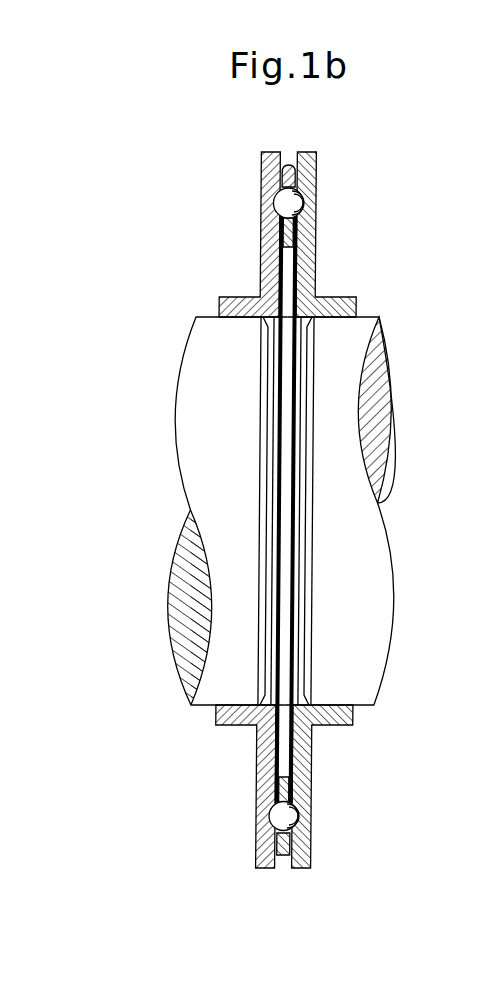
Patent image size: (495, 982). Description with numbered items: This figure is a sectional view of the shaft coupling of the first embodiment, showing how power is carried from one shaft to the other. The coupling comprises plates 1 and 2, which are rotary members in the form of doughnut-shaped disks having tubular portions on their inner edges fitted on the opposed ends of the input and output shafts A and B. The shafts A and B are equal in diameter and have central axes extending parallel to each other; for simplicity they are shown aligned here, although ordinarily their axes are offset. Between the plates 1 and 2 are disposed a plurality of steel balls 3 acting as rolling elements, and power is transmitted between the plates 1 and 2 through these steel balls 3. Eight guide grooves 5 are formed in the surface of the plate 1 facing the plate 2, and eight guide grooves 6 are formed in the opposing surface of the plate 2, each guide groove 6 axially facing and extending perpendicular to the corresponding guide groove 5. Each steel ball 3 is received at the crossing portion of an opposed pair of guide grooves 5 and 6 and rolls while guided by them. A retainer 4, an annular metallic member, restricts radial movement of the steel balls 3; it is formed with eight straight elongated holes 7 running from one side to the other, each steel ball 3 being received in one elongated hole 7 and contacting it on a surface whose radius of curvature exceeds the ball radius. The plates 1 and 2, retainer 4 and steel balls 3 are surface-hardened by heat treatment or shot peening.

The plate 1 is at (263, 248).
The plate 2 is at (310, 270).
The steel ball 3 is at (297, 193).
The retainer 4 is at (280, 180).
The guide groove 5 is at (277, 210).
The guide groove 6 is at (302, 204).
The elongated hole 7 is at (302, 220).
The input shaft A is at (200, 424).
The output shaft B is at (355, 607).